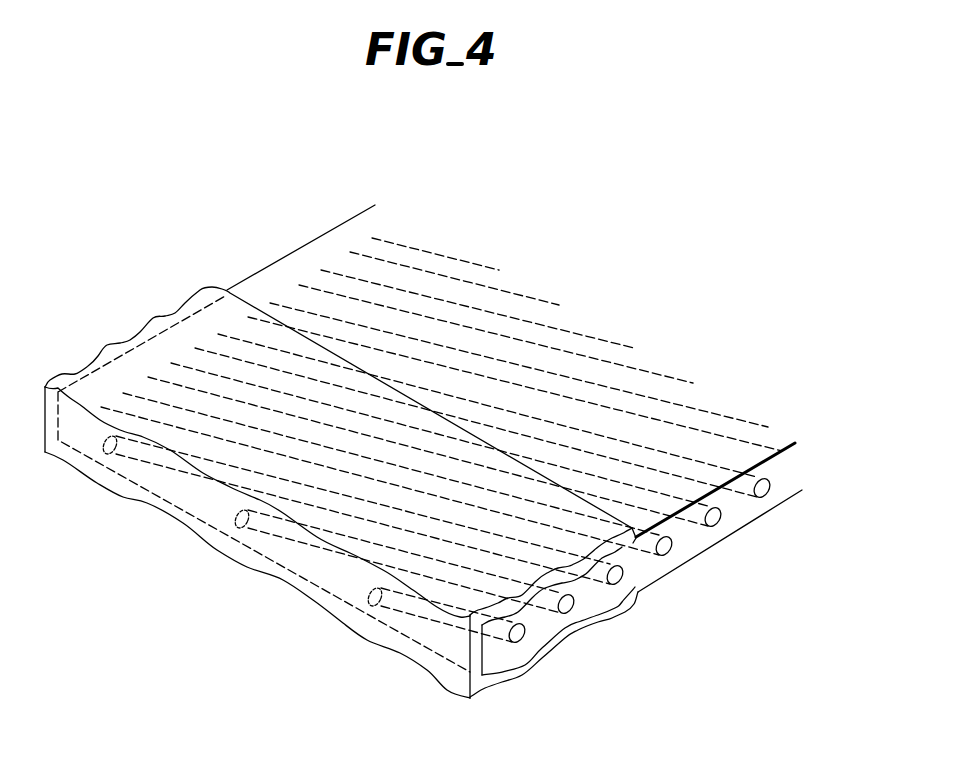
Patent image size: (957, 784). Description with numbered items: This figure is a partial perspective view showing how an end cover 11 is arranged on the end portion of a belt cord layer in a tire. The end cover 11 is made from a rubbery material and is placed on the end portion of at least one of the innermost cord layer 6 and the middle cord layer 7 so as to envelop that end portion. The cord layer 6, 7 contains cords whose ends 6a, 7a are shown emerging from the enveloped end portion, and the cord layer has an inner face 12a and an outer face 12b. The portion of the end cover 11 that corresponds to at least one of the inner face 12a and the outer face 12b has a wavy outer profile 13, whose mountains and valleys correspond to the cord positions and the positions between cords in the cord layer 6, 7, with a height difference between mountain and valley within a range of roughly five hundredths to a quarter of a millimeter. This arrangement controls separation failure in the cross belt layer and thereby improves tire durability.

The innermost cord layer 6 is at (423, 434).
The middle cord layer 7 is at (600, 273).
The cooling passage holes 6a is at (469, 441).
The cooling passage holes 7a is at (765, 497).
The end cover 11 is at (523, 666).
The inner face 12a is at (572, 626).
The outer face 12b is at (617, 607).
The wavy outer profile 13 is at (547, 656).